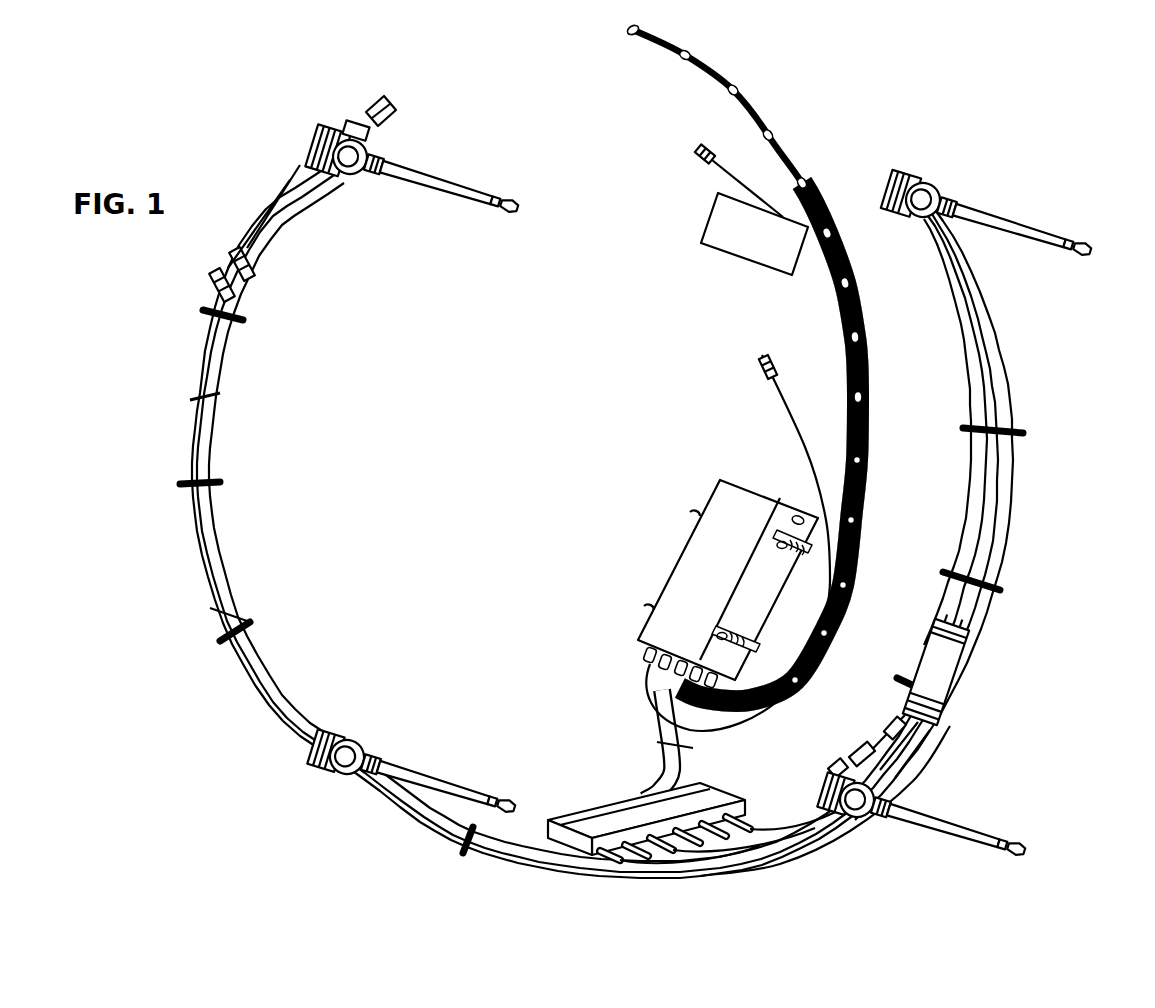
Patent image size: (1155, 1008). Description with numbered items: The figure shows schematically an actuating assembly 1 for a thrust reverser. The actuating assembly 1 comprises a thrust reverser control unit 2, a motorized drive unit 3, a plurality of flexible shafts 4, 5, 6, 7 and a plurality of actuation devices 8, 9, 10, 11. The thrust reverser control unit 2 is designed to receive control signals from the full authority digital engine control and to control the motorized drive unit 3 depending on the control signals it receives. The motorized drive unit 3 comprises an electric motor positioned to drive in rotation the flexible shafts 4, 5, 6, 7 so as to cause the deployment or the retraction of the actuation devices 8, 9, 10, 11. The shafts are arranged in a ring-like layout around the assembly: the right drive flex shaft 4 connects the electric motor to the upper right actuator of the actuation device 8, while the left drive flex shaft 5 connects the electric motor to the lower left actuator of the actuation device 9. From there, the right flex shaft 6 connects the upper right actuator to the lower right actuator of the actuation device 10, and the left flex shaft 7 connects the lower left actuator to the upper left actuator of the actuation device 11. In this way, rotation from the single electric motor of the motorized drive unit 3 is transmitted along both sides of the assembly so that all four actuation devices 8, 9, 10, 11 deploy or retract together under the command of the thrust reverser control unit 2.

The actuating assembly 1 is at (1082, 580).
The thrust reverser control unit 2 is at (697, 558).
The motorized drive unit 3 is at (962, 673).
The right drive flex shaft 4 is at (1012, 468).
The left drive flex shaft 5 is at (677, 871).
The right flex shaft 6 is at (993, 513).
The left flex shaft 7 is at (252, 672).
The actuation device 8 is at (1012, 218).
The actuation device 9 is at (440, 781).
The actuation device 10 is at (953, 817).
The actuation device 11 is at (448, 178).